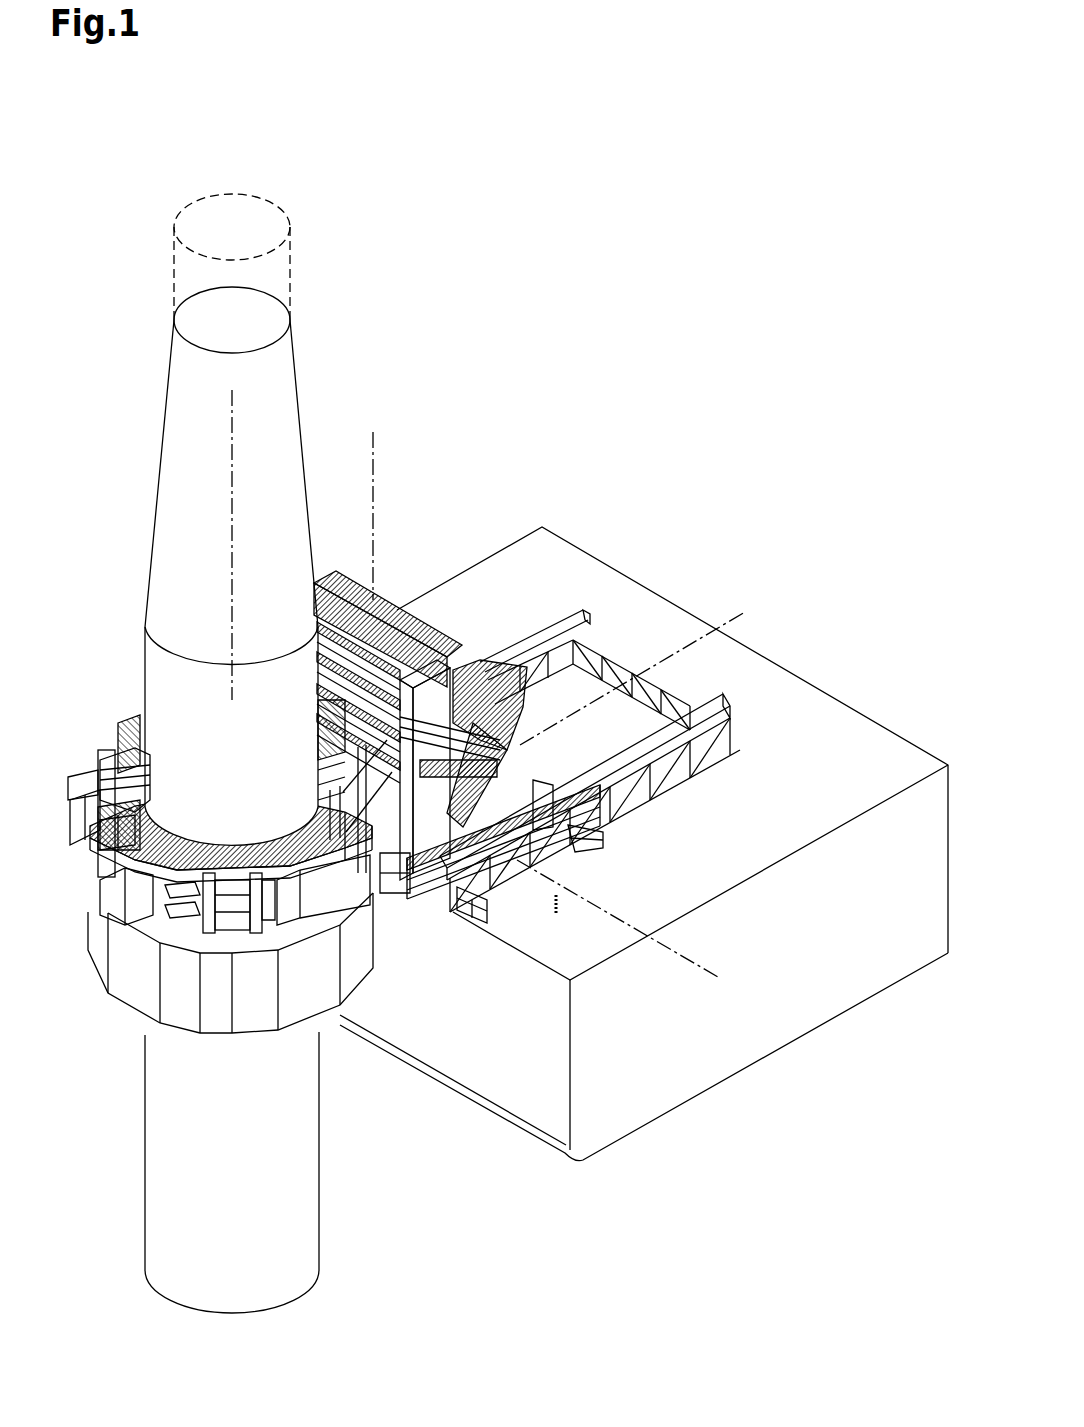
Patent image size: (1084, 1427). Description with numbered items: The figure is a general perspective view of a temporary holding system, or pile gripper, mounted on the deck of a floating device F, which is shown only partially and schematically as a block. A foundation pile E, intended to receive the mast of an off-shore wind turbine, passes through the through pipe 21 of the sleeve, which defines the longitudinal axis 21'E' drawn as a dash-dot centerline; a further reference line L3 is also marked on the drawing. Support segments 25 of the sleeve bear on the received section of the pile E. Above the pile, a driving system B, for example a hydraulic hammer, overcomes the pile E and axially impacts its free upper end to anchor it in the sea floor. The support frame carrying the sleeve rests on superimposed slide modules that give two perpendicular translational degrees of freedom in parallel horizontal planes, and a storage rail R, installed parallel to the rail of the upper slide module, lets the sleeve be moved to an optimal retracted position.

The driving system B is at (195, 283).
The foundation pile E is at (212, 392).
The longitudinal axis 21'E' is at (150, 575).
The third axis line L3 is at (379, 462).
The through pipe 21 is at (232, 970).
The support segments 25 is at (132, 773).
The floating device F is at (723, 670).
The storage rail R is at (737, 693).